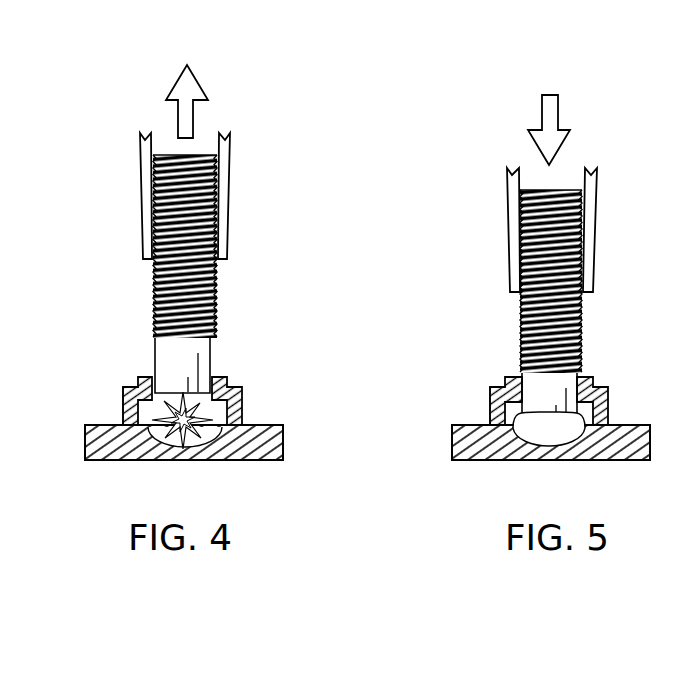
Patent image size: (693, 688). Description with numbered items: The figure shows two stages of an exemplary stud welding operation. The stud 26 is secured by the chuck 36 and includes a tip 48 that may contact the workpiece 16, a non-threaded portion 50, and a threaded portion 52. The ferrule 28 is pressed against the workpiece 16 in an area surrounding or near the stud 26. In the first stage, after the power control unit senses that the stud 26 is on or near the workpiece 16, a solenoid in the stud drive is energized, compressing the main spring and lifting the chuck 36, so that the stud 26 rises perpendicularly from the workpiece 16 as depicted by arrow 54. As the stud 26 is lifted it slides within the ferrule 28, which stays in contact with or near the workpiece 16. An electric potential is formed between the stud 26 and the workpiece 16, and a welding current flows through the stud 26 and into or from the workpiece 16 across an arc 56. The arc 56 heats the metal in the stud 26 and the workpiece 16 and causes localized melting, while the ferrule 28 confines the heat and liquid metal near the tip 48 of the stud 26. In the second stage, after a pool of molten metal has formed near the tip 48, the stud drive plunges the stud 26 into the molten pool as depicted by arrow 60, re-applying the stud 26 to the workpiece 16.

In FIG. 4, the workpiece 16 is at (232, 460).
In FIG. 5, the workpiece 16 is at (557, 462).
In FIG. 4, the stud 26 is at (132, 274).
In FIG. 5, the stud 26 is at (506, 301).
In FIG. 4, the ferrule 28 is at (128, 402).
In FIG. 5, the ferrule 28 is at (493, 400).
In FIG. 4, the chuck 36 is at (140, 173).
In FIG. 5, the chuck 36 is at (507, 195).
In FIG. 4, the tip 48 is at (138, 385).
In FIG. 5, the tip 48 is at (549, 401).
In FIG. 4, the non-threaded portion 50 is at (165, 358).
In FIG. 5, the non-threaded portion 50 is at (530, 387).
In FIG. 4, the threaded portion 52 is at (155, 270).
In FIG. 5, the threaded portion 52 is at (528, 322).
In FIG. 4, the arrow 54 is at (173, 90).
In FIG. 4, the arc 56 is at (183, 437).
In FIG. 5, the arrow 60 is at (540, 117).